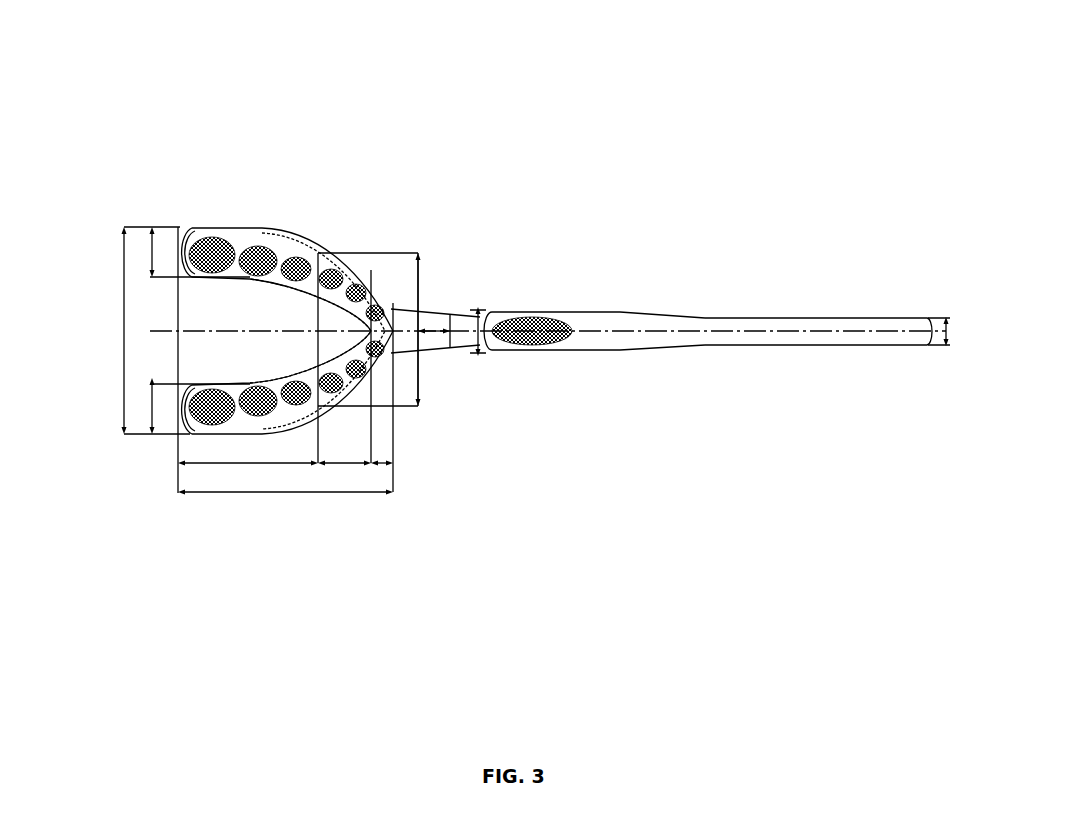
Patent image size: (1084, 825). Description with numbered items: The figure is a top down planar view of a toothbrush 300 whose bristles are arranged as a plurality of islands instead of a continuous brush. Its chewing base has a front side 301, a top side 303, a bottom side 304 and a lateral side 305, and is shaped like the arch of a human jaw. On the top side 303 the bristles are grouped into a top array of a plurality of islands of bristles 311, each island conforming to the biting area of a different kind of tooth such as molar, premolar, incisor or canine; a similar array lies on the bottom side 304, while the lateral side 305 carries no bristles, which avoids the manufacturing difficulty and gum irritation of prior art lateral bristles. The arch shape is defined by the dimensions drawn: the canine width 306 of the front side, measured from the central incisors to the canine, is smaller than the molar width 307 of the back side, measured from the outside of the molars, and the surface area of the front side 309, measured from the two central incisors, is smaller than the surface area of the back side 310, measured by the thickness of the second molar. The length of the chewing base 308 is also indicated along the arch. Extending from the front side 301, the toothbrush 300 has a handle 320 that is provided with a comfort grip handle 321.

The toothbrush having plurality of islands of bristles 300 is at (609, 94).
The front side 301 is at (236, 424).
The top side 303 is at (388, 303).
The bottom side 304 is at (182, 240).
The lateral side 305 is at (300, 372).
The canine width 306 is at (418, 270).
The molar width 307 is at (122, 310).
The length of the chewing base 308 is at (333, 492).
The surface area of the front side 309 is at (386, 463).
The surface area of the back side 310 is at (152, 279).
The top array of plurality of islands of bristles 311 is at (213, 244).
The handle 320 is at (797, 318).
The comfort grip handle 321 is at (523, 323).